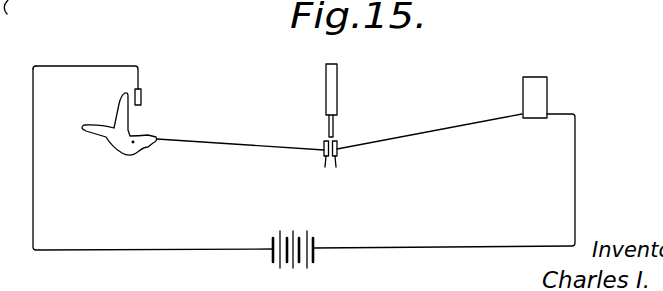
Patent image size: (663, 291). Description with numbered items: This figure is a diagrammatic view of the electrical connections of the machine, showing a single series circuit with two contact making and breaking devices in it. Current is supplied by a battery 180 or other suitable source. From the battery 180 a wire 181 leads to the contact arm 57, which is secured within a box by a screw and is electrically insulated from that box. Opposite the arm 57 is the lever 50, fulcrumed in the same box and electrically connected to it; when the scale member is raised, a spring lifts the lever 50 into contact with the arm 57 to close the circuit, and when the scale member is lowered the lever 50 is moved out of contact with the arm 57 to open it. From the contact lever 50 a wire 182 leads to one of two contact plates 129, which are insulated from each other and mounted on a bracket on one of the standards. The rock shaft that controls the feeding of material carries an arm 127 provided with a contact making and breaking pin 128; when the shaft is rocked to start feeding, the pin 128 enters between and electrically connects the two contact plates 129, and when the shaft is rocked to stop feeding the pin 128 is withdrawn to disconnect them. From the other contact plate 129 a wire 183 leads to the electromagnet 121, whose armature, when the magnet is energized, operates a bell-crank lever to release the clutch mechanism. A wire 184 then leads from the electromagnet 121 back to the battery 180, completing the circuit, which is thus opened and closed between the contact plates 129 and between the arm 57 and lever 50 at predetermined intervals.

The lever 50 is at (105, 137).
The contact arm 57 is at (142, 98).
The electromagnet 121 is at (540, 87).
The arm 127 is at (326, 84).
The contact making and breaking pin 128 is at (334, 123).
The contact plates 129 is at (330, 169).
The battery 180 is at (289, 261).
The wire 181 is at (33, 193).
The wire 182 is at (229, 143).
The wire 183 is at (430, 128).
The wire 184 is at (575, 171).